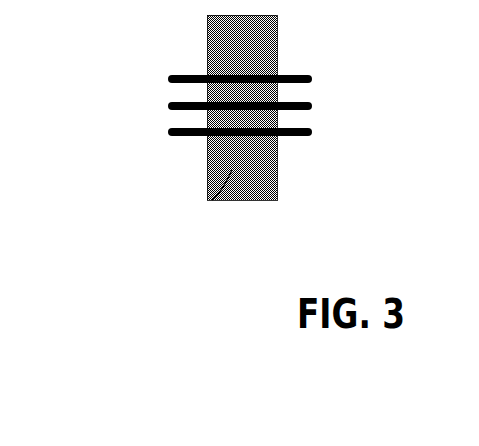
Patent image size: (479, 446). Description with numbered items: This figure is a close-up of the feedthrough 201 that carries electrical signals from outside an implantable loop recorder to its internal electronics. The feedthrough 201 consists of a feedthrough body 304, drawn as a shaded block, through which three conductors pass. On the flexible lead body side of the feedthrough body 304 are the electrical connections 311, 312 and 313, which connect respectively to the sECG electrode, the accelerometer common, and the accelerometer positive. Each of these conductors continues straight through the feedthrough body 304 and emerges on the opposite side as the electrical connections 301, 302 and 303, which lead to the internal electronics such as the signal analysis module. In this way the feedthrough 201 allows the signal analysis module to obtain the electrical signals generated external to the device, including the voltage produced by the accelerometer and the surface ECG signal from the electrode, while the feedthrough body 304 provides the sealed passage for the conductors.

The feedthrough 201 is at (212, 201).
The electrical connection 301 is at (170, 78).
The electrical connection 302 is at (168, 106).
The electrical connection 303 is at (168, 133).
The feedthrough body 304 is at (212, 200).
The electrical connection 311 is at (308, 78).
The electrical connection 312 is at (308, 105).
The electrical connection 313 is at (308, 131).